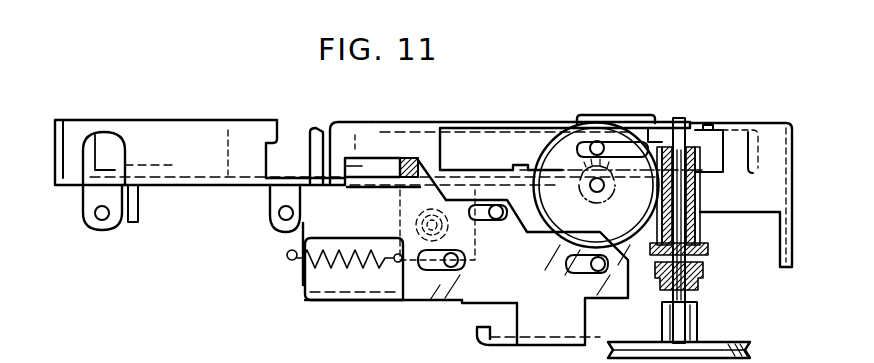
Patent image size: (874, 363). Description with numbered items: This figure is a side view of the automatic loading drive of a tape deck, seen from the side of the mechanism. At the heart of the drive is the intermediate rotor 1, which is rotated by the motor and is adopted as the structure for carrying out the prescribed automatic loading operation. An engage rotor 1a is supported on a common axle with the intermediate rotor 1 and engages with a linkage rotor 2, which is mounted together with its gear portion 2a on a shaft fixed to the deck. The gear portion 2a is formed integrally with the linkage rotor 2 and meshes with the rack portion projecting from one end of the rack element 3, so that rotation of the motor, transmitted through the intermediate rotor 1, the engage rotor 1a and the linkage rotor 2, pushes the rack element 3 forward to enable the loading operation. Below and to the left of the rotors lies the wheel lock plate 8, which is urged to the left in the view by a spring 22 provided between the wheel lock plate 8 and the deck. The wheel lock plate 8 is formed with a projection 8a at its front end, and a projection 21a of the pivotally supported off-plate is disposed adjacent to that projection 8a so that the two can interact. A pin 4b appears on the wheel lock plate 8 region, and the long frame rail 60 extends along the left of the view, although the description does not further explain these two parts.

The intermediate rotor 1 is at (712, 342).
The engage rotor 1a is at (702, 145).
The linkage rotor 2 is at (612, 133).
The gear portion 2a is at (612, 205).
The rack element 3 is at (480, 145).
The guide pin 4b is at (598, 273).
The wheel lock plate 8 is at (475, 280).
The projection 8a is at (410, 158).
The projection 21a is at (390, 160).
The spring 22 is at (352, 268).
The frame rail 60 is at (205, 185).